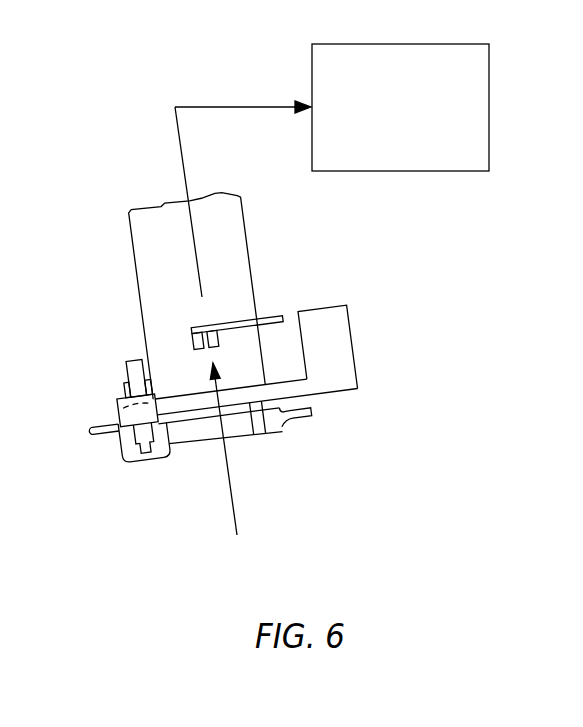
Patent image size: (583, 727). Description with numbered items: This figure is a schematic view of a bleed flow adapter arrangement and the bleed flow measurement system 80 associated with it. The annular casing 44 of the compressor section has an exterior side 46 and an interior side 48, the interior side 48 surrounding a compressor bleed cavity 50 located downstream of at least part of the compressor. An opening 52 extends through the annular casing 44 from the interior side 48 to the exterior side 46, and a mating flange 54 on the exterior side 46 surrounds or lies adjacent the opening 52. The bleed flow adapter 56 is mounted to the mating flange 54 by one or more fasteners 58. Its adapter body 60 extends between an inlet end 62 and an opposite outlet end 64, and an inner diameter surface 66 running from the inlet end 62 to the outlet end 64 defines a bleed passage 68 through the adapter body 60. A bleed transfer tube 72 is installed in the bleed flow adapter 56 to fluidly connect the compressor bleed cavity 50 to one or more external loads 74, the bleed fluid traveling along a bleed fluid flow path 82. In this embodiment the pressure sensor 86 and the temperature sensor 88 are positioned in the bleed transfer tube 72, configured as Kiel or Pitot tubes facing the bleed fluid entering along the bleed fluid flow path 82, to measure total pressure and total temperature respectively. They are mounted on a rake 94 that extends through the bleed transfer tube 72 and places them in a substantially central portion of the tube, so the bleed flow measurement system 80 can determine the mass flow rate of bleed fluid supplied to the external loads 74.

The annular casing 44 is at (272, 452).
The exterior side 46 is at (98, 437).
The interior side 48 is at (313, 422).
The compressor bleed cavity 50 is at (113, 453).
The opening 52 is at (191, 447).
The mating flange 54 is at (275, 407).
The bleed flow adapter 56 is at (310, 360).
The fastener 58 is at (127, 368).
The adapter body 60 is at (368, 382).
The inlet end 62 is at (240, 410).
The outlet end 64 is at (162, 390).
The inner diameter surface 66 is at (116, 409).
The bleed passage 68 is at (183, 405).
The bleed transfer tube 72 is at (243, 218).
The external loads 74 is at (489, 79).
The bleed flow measurement system 80 is at (294, 294).
The bleed fluid flow path 82 is at (181, 152).
The pressure sensor 86 is at (197, 328).
The temperature sensor 88 is at (213, 328).
The rake 94 is at (272, 316).